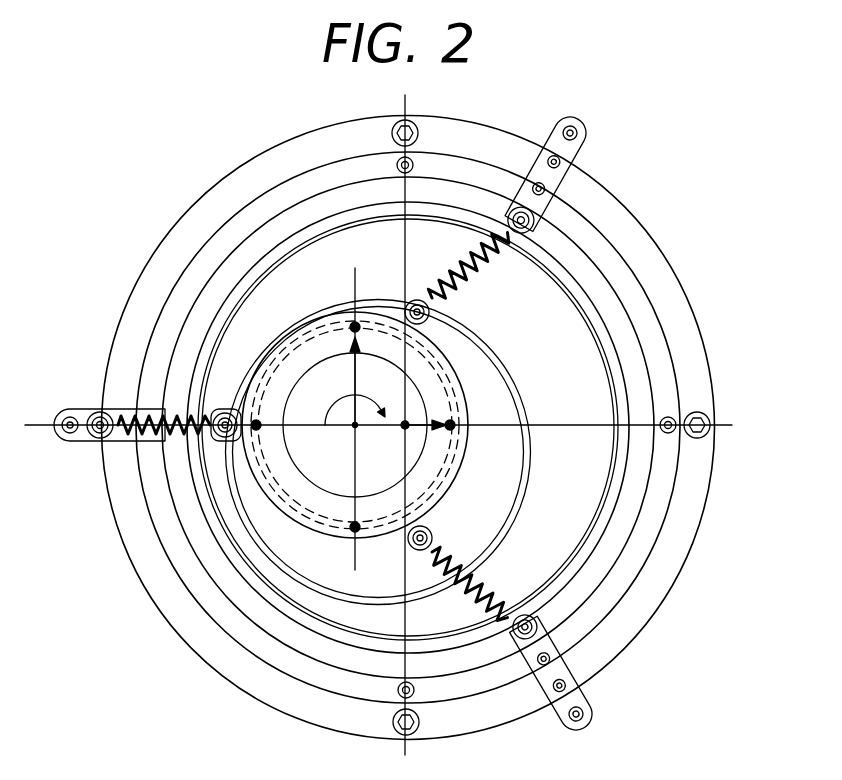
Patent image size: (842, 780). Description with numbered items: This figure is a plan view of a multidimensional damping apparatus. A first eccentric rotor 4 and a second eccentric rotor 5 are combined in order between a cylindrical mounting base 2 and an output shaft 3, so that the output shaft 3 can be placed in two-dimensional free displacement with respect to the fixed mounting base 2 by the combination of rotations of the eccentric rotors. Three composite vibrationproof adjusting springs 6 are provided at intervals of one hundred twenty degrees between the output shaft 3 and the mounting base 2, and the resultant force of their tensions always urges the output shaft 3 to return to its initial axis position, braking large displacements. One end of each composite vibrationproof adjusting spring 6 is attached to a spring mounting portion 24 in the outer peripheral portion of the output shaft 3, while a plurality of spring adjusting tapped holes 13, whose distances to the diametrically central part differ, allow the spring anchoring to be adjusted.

The cylindrical mounting base 2 is at (628, 233).
The output shaft 3 is at (256, 495).
The first eccentric rotor 4 is at (592, 363).
The second eccentric rotor 5 is at (490, 468).
The composite vibrationproof adjusting spring 6 is at (130, 432).
The spring adjusting tapped hole 13 is at (583, 715).
The spring mounting portion 24 is at (226, 411).